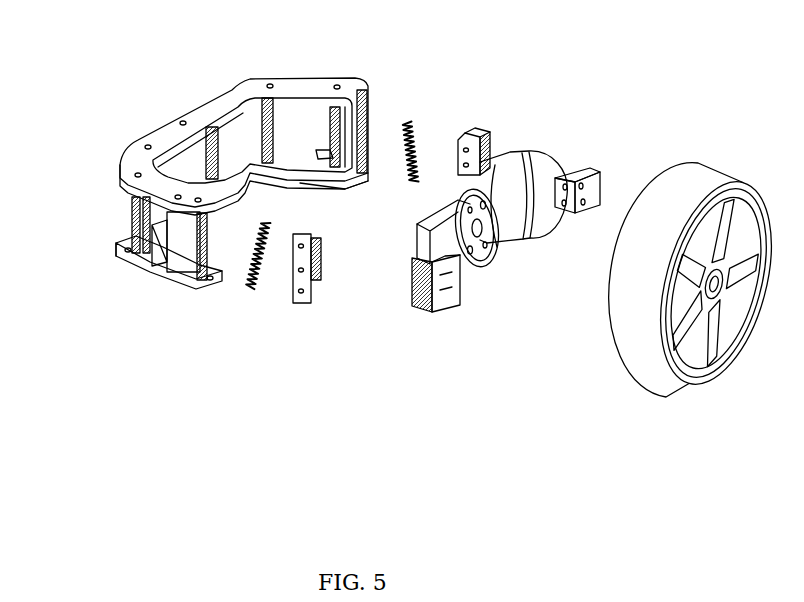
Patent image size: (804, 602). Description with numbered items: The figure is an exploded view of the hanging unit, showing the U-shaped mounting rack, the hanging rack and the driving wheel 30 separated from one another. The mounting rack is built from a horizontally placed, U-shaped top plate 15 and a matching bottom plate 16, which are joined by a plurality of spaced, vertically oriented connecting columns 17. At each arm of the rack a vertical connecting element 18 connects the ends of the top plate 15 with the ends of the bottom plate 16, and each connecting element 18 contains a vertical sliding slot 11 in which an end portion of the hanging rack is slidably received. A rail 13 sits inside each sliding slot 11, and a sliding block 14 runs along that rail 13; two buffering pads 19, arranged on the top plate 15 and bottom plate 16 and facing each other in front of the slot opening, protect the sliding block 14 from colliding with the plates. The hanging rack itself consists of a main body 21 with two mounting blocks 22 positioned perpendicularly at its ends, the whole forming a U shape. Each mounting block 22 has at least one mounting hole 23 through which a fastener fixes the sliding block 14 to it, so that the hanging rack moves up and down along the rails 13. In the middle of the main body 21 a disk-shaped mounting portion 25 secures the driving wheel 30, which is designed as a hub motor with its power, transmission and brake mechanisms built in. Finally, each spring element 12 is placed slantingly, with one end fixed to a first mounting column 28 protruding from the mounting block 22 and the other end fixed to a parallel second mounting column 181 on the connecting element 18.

The sliding slot 11 is at (373, 110).
The spring element 12 is at (263, 222).
The rail 13 is at (300, 302).
The sliding block 14 is at (490, 140).
The top plate 15 is at (168, 140).
The bottom plate 16 is at (133, 267).
The connecting column 17 is at (257, 128).
The connecting element 18 is at (187, 257).
The second mounting column 181 is at (323, 153).
The buffering pad 19 is at (345, 190).
The main body 21 is at (538, 193).
The mounting block 22 is at (440, 293).
The mounting hole 23 is at (417, 302).
The mounting portion 25 is at (470, 262).
The first mounting column 28 is at (413, 293).
The driving wheel 30 is at (648, 347).